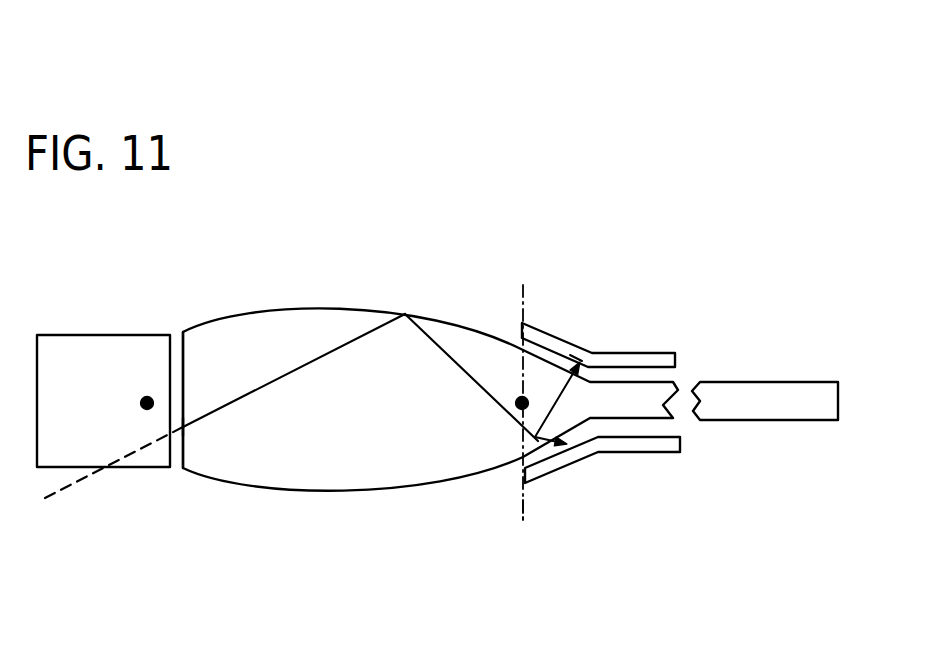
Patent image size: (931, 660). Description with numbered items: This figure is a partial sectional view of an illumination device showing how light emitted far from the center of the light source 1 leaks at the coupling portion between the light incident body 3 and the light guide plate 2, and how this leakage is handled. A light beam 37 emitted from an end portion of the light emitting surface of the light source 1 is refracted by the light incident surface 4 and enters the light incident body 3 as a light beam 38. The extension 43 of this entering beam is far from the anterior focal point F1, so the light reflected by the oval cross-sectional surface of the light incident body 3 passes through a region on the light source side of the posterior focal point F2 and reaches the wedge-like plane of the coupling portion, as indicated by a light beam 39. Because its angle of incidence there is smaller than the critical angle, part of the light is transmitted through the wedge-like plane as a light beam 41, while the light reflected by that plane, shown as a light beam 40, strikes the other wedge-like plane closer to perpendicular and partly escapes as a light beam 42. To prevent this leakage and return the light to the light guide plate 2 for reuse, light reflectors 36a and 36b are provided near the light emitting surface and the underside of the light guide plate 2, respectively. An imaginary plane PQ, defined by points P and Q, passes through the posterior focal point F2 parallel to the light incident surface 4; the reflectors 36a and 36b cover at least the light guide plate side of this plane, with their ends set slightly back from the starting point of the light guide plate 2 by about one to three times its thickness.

The light source 1 is at (60, 335).
The light guide plate 2 is at (730, 382).
The light incident body 3 is at (323, 495).
The light incident surface 4 is at (188, 367).
The light reflector 36a is at (625, 352).
The light reflector 36b is at (630, 450).
The light beam 37 is at (177, 440).
The light beam 38 is at (262, 387).
The light beam 39 is at (435, 341).
The light beam 40 is at (558, 402).
The light beam 41 is at (550, 443).
The light beam 42 is at (573, 353).
The extension 43 is at (72, 482).
The anterior focal point F1 is at (145, 386).
The posterior focal point F2 is at (502, 416).
The imaginary plane P is at (519, 391).
The imaginary plane Q is at (520, 527).